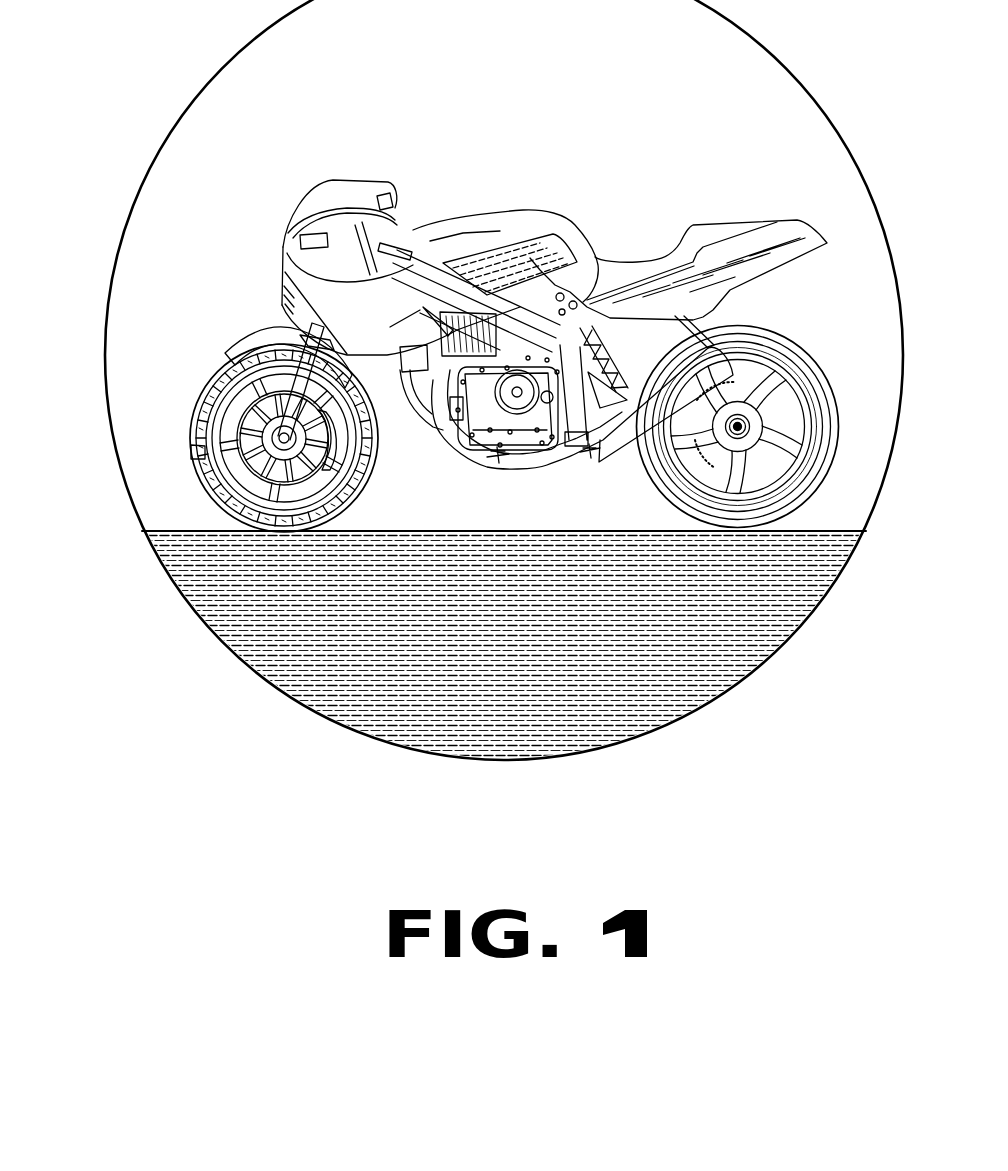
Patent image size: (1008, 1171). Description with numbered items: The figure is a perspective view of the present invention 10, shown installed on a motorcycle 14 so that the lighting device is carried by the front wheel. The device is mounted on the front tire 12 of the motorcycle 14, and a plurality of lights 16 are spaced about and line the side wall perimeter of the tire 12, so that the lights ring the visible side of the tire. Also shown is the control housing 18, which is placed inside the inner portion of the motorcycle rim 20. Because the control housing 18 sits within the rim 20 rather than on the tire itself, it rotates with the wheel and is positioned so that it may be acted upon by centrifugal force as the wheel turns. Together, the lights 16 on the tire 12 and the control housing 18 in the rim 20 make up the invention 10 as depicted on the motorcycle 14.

The present invention 10 is at (160, 390).
The front tire 12 is at (211, 395).
The motorcycle 14 is at (467, 238).
The lights 16 is at (222, 497).
The control housing 18 is at (315, 478).
The motorcycle rim 20 is at (204, 452).